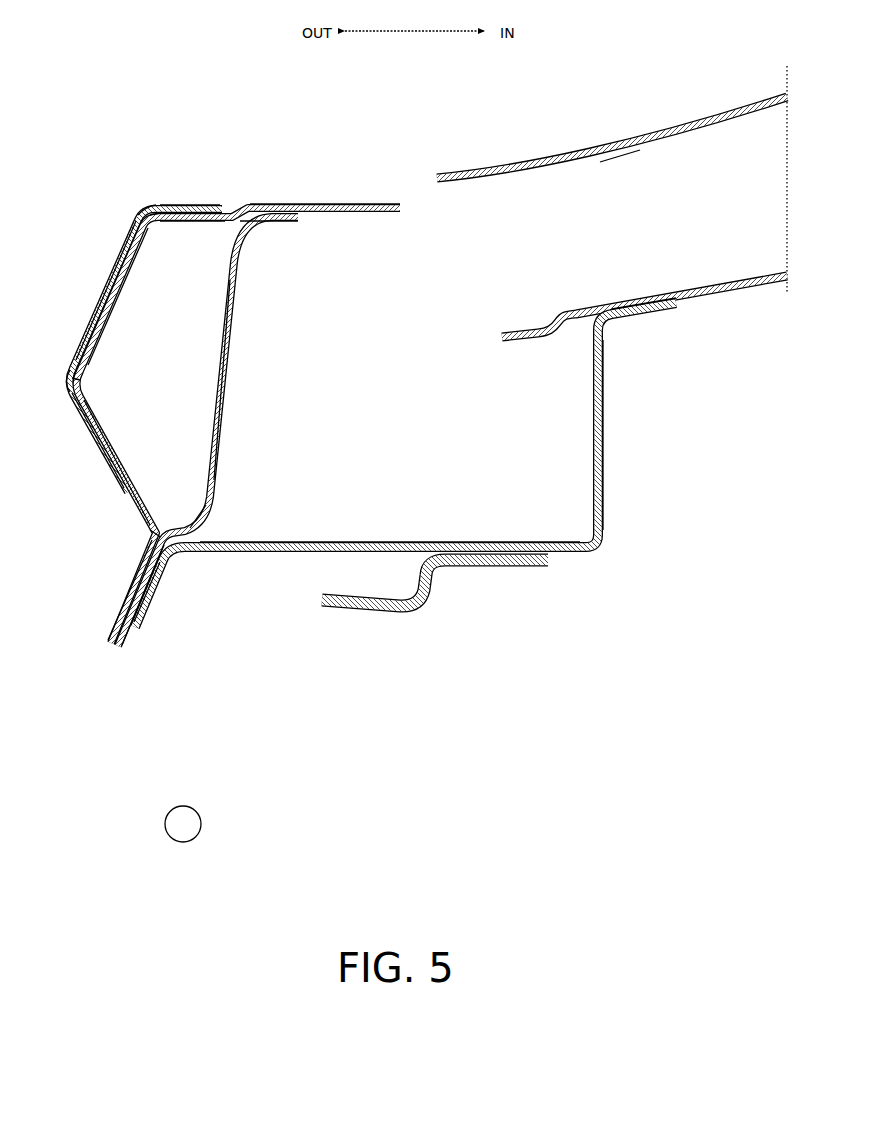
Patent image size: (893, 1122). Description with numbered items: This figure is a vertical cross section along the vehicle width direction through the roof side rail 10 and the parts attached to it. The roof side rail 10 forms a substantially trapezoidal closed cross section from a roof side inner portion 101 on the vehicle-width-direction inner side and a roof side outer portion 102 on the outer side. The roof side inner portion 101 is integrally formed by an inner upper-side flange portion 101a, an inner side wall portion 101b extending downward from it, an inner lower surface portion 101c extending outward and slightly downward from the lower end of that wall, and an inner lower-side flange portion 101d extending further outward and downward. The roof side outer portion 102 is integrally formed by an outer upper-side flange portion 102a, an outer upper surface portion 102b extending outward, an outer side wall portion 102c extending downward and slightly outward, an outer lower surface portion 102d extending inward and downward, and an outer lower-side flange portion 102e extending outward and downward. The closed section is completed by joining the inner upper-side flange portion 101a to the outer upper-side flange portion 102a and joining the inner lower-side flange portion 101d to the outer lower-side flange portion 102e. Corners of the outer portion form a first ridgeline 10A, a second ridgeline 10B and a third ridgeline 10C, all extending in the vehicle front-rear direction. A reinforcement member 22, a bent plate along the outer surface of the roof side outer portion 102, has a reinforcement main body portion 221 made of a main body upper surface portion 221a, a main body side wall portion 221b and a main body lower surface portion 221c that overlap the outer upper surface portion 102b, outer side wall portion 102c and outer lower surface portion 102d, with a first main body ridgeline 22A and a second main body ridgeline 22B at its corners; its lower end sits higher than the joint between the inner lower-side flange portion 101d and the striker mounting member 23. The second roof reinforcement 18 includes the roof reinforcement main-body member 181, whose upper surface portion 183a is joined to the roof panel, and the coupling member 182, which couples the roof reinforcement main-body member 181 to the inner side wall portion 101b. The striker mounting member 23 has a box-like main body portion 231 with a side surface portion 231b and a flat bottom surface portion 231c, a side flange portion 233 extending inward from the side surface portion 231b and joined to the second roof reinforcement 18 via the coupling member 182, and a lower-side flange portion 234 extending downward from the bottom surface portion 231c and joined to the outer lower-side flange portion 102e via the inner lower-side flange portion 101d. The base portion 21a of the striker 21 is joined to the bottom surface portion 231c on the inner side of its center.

The roof side rail 10 is at (230, 423).
The roof side inner portion 101 is at (224, 413).
The inner upper-side flange portion 101a is at (276, 224).
The inner side wall portion 101b is at (236, 352).
The inner lower surface portion 101c is at (204, 502).
The inner lower-side flange portion 101d is at (118, 650).
The roof side outer portion 102 is at (356, 216).
The outer upper-side flange portion 102a is at (328, 204).
The outer upper surface portion 102b is at (184, 222).
The outer side wall portion 102c is at (108, 305).
The outer lower surface portion 102d is at (104, 433).
The outer lower-side flange portion 102e is at (132, 592).
The first ridgeline 10A is at (144, 220).
The second ridgeline 10B is at (54, 380).
The third ridgeline 10C is at (155, 524).
The second roof reinforcement 18 is at (612, 209).
The roof reinforcement main-body member 181 is at (711, 118).
The coupling member 182 is at (737, 284).
The upper surface portion 183a is at (640, 155).
The striker 21 is at (356, 720).
The base portion 21a is at (430, 603).
The reinforcement member 22 is at (143, 296).
The reinforcement main body portion 221 is at (220, 206).
The main body upper surface portion 221a is at (210, 207).
The main body side wall portion 221b is at (102, 290).
The main body lower surface portion 221c is at (100, 452).
The first main body ridgeline 22A is at (136, 211).
The second main body ridgeline 22B is at (58, 385).
The striker mounting member 23 is at (443, 483).
The main body portion 231 is at (600, 552).
The side surface portion 231b is at (603, 450).
The bottom surface portion 231c is at (365, 543).
The side flange portion 233 is at (645, 318).
The lower-side flange portion 234 is at (142, 598).